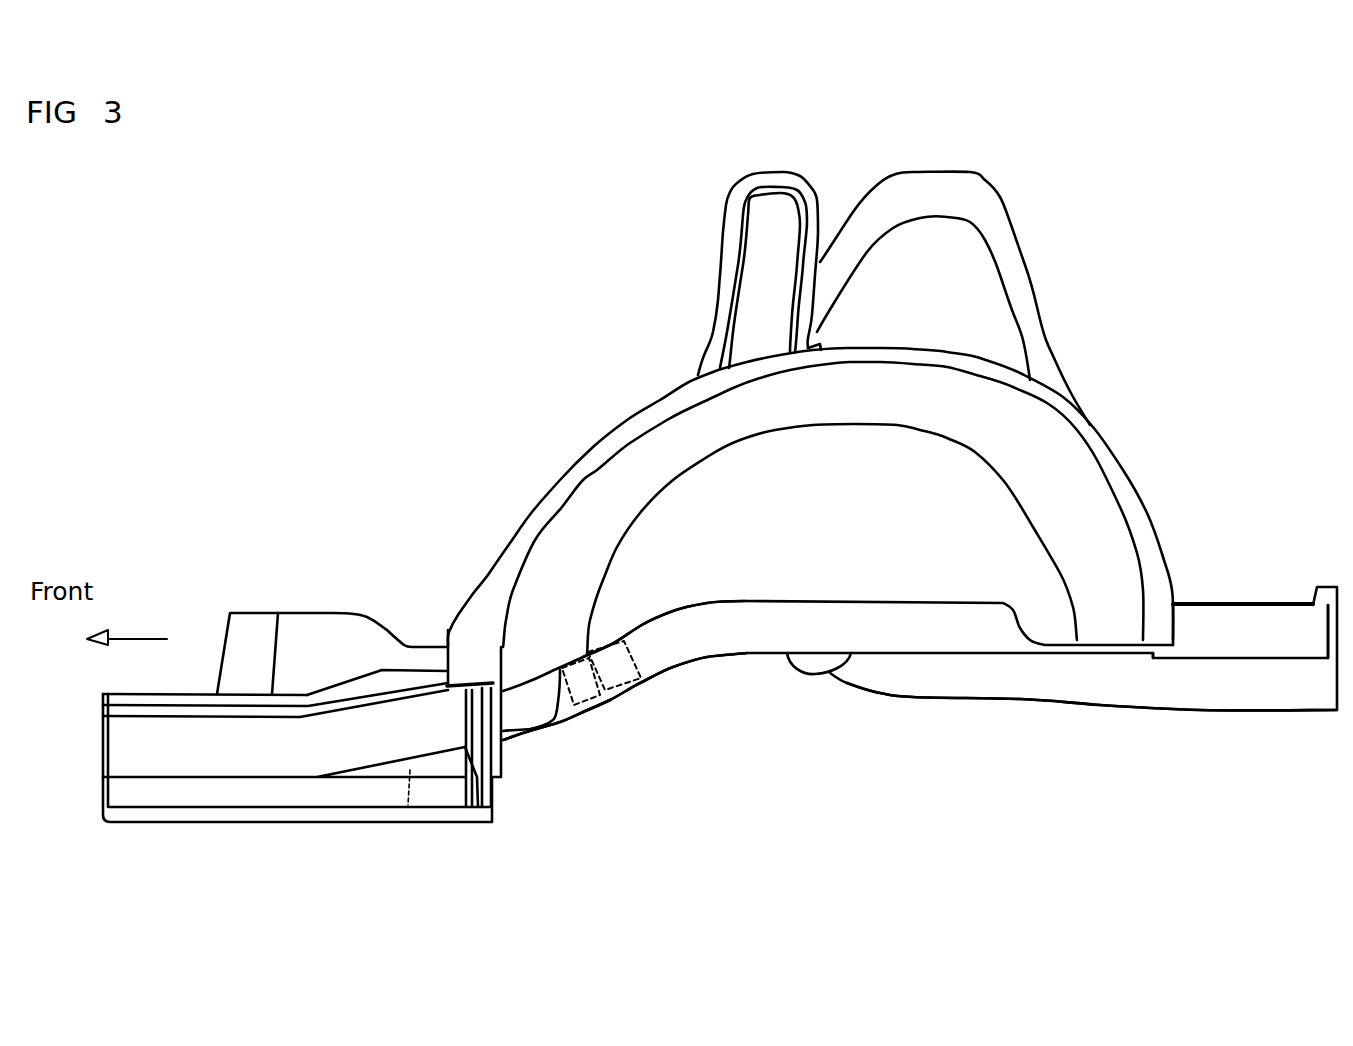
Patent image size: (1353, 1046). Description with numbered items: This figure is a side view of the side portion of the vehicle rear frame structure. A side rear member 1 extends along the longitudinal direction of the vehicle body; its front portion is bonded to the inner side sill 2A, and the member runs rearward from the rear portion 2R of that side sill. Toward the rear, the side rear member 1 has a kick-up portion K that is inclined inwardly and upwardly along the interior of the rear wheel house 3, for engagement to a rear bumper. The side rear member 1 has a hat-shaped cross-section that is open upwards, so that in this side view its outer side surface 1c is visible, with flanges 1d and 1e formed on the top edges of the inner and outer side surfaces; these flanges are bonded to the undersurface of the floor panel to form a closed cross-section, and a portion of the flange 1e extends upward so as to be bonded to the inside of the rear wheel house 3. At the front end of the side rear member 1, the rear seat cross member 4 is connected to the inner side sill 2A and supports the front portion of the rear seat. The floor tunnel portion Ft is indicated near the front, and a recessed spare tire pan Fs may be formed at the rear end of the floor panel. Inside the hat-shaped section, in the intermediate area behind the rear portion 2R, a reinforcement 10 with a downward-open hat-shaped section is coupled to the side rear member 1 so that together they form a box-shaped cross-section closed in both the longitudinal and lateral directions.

The side rear member 1 is at (722, 658).
The outer side surface 1c is at (678, 662).
The flange 1e is at (1218, 603).
The flange 1d is at (1250, 631).
The inner side sill 2A is at (145, 750).
The rear portion of the inner side sill 2R is at (433, 737).
The rear wheel house 3 is at (957, 508).
The rear seat cross member 4 is at (247, 620).
The reinforcement 10 is at (604, 677).
The kick-up portion K is at (555, 731).
The floor tunnel portion Ft is at (338, 620).
The spare tire pan Fs is at (1175, 703).